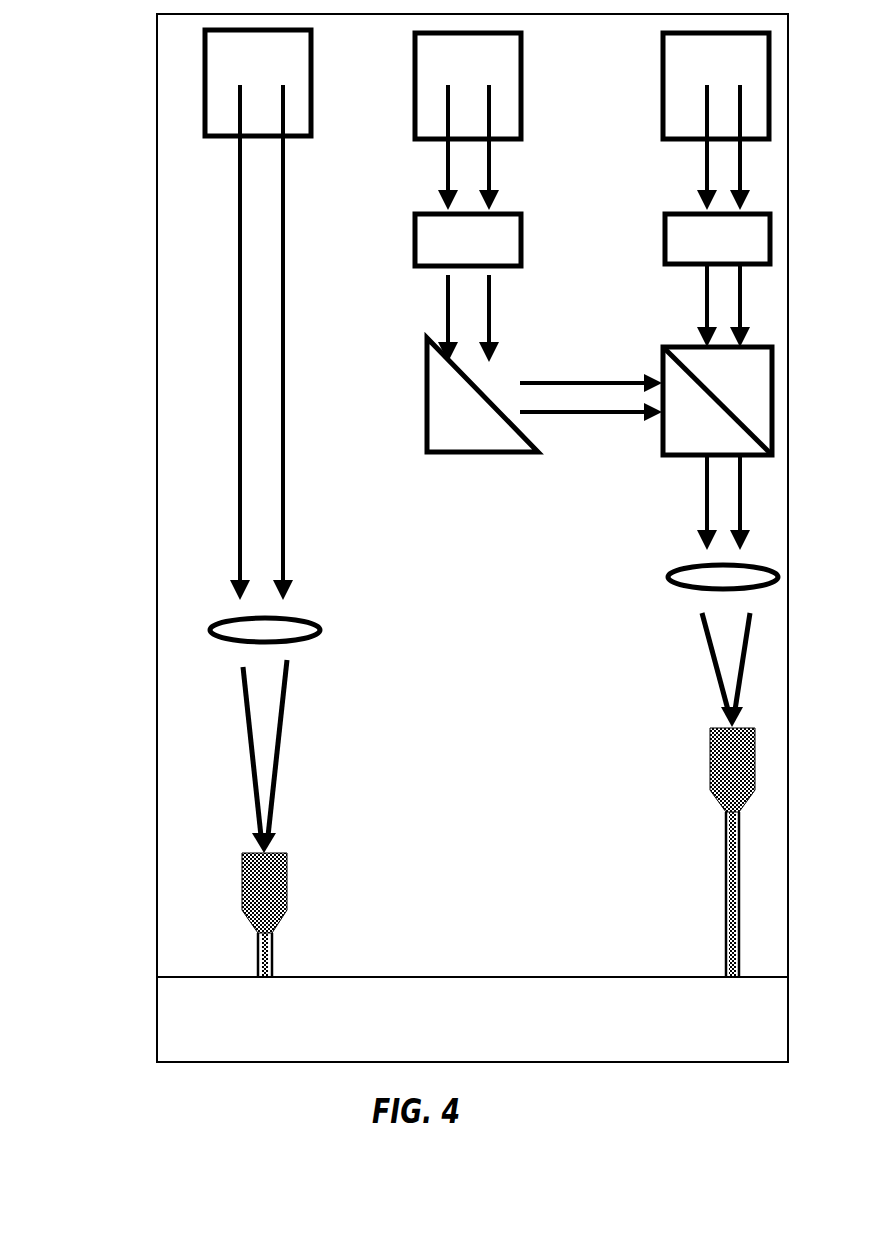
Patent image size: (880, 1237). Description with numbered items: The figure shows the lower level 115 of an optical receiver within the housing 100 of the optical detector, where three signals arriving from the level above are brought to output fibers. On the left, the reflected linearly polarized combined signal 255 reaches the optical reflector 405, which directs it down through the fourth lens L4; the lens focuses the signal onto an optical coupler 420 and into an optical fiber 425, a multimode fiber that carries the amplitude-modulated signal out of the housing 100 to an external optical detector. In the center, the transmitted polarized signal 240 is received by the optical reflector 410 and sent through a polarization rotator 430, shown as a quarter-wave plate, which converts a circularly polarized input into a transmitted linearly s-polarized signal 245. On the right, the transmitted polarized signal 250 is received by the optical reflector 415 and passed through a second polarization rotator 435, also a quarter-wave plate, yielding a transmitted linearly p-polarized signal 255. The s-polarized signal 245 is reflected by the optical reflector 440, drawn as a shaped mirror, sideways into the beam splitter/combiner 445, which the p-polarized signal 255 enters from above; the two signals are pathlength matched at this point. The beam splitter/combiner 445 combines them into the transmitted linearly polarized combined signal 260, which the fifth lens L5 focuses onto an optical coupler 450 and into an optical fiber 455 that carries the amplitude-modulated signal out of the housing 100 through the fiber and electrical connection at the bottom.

The housing 100 is at (148, 275).
The lower level 115 is at (525, 752).
The optical reflector 405 is at (313, 72).
The optical reflector 410 is at (523, 82).
The optical reflector 415 is at (660, 66).
The transmitted polarized signal 240 is at (443, 152).
The transmitted polarized signal 250 is at (705, 152).
The polarization rotator 430 is at (413, 238).
The polarization rotator 435 is at (663, 225).
The transmitted linearly s-polarized signal 245 is at (445, 296).
The transmitted linearly p-polarized signal 255 is at (283, 462).
The optical reflector 440 is at (427, 392).
The beam splitter/combiner 445 is at (663, 440).
The transmitted linearly polarized combined signal 260 is at (707, 500).
The fourth lens L4 is at (239, 728).
The fifth lens L5 is at (699, 646).
The optical coupler 420 is at (287, 878).
The optical fiber 425 is at (258, 952).
The optical coupler 450 is at (712, 762).
The optical fiber 455 is at (726, 933).